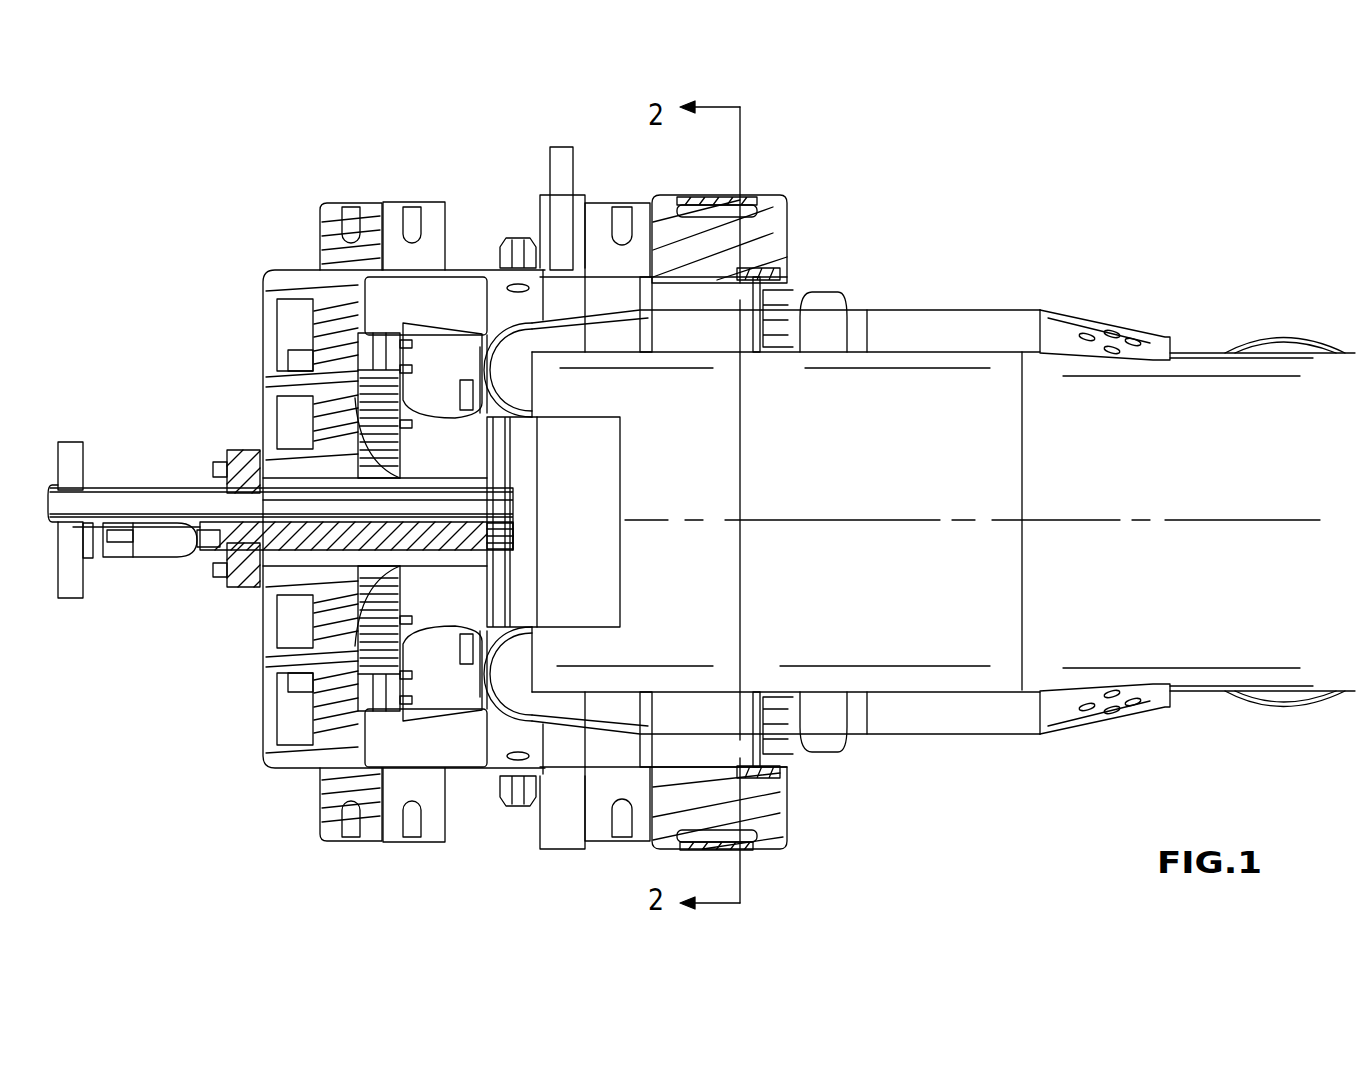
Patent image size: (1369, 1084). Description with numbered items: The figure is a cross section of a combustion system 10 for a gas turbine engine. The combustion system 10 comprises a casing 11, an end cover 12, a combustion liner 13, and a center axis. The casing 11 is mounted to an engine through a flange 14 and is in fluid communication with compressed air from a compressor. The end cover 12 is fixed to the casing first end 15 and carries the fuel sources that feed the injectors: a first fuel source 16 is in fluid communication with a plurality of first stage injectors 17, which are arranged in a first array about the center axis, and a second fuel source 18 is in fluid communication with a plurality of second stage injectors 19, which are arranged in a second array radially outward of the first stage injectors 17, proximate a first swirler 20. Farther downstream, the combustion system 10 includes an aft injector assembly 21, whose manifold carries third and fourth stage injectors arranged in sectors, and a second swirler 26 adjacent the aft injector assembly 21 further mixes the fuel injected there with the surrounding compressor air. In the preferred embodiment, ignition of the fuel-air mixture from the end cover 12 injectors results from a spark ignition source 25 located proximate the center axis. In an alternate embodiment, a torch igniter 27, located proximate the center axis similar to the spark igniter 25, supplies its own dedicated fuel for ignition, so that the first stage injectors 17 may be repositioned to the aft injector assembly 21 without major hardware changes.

The combustion system 10 is at (931, 157).
The casing 11 is at (640, 218).
The end cover 12 is at (323, 228).
The combustion liner 13 is at (1003, 350).
The flange 14 is at (787, 200).
The casing first end 15 is at (383, 203).
The first fuel source 16 is at (295, 422).
The first stage injectors 17 is at (382, 416).
The second fuel source 18 is at (293, 330).
The second stage injectors 19 is at (400, 372).
The first swirler 20 is at (380, 350).
The aft injector assembly 21 is at (742, 203).
The spark ignition source 25 is at (518, 503).
The second swirler 26 is at (800, 318).
The torch igniter 27 is at (515, 540).